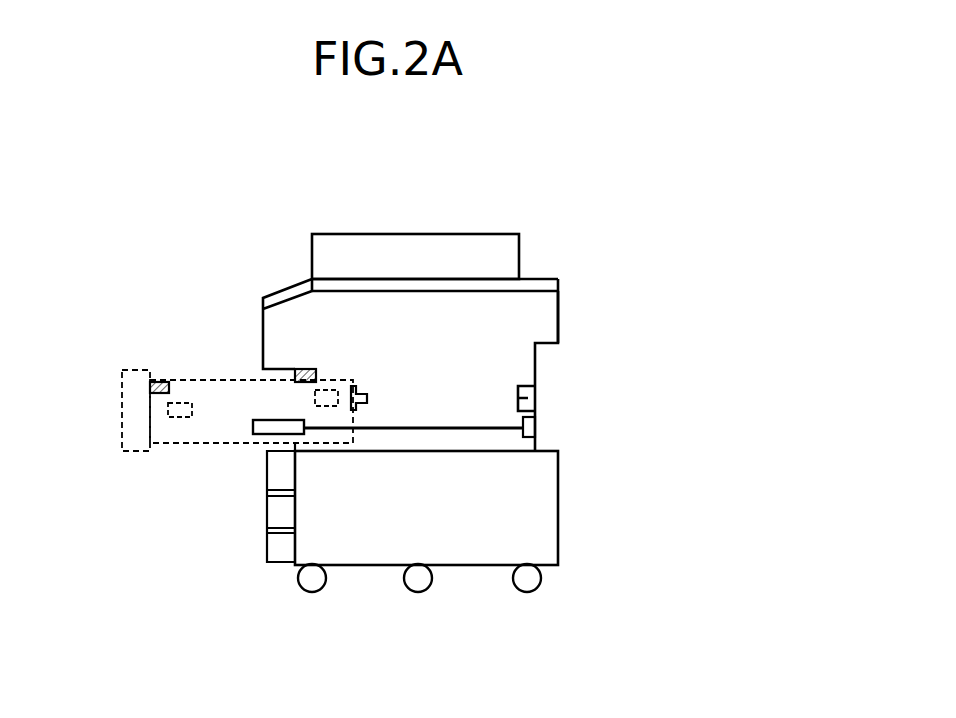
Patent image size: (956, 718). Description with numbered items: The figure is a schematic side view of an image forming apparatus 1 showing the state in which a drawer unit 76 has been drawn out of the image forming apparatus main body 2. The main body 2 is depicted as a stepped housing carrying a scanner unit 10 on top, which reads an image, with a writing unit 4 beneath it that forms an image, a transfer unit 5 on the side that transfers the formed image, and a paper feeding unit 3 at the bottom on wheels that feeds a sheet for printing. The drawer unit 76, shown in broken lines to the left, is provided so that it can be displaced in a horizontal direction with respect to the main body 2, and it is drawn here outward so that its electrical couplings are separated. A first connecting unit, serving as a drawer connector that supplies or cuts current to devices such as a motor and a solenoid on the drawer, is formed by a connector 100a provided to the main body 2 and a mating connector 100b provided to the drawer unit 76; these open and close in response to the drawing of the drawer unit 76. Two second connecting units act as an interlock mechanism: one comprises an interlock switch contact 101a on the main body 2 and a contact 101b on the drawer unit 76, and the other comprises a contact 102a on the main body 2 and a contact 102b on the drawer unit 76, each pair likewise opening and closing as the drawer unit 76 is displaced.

The image forming apparatus 1 is at (558, 162).
The image forming apparatus main body 2 is at (560, 313).
The paper feeding unit 3 is at (558, 520).
The writing unit 4 is at (538, 279).
The transfer unit 5 is at (560, 363).
The scanner unit 10 is at (413, 233).
The drawer unit 76 is at (122, 408).
The connector 100a is at (517, 385).
The connector 100b is at (368, 398).
The contact (interlock switch) 101a is at (330, 390).
The contact 101b is at (180, 403).
The contact 102a is at (301, 369).
The contact 102b is at (158, 382).